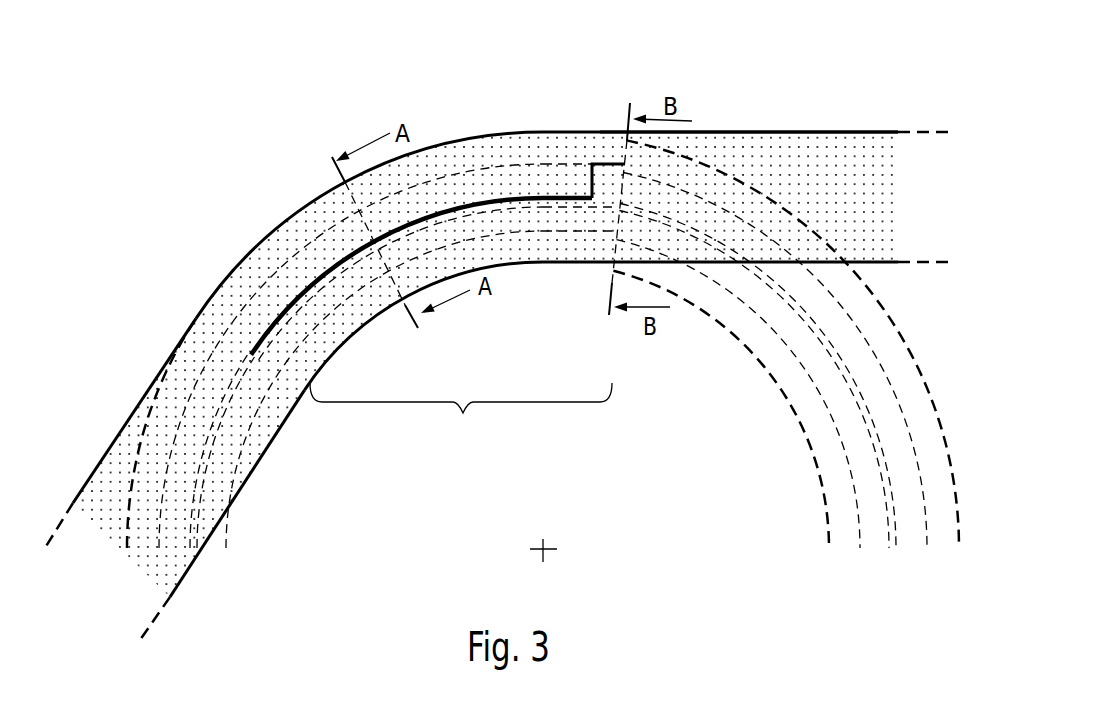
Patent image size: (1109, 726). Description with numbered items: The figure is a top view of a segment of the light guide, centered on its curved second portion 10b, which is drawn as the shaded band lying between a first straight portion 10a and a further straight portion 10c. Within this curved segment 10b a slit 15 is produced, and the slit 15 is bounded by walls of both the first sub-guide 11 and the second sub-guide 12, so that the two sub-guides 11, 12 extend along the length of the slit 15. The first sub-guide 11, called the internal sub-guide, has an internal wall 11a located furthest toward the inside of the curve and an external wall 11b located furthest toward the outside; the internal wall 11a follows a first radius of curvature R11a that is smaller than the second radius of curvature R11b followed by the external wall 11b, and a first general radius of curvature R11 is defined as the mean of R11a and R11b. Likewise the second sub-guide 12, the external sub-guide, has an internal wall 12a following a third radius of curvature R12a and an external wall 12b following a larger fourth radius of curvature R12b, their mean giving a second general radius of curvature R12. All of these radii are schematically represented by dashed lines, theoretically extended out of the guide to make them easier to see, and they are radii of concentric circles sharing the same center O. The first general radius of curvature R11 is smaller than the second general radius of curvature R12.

The first straight pipe section 10a is at (185, 608).
The curved second portion 10b is at (461, 415).
The second straight pipe section 10c is at (815, 122).
The first sub-guide 11 is at (558, 217).
The internal wall 11a is at (556, 268).
The external wall 11b is at (508, 203).
The second sub-guide 12 is at (285, 245).
The internal wall 12a is at (307, 290).
The external wall 12b is at (313, 200).
The slit 15 is at (473, 186).
The first general radius of curvature R11 is at (798, 355).
The first radius of curvature R11a is at (714, 316).
The second radius of curvature R11b is at (874, 436).
The second general radius of curvature R12 is at (163, 496).
The third radius of curvature R12a is at (213, 428).
The fourth radius of curvature R12b is at (162, 387).
The center O is at (549, 545).